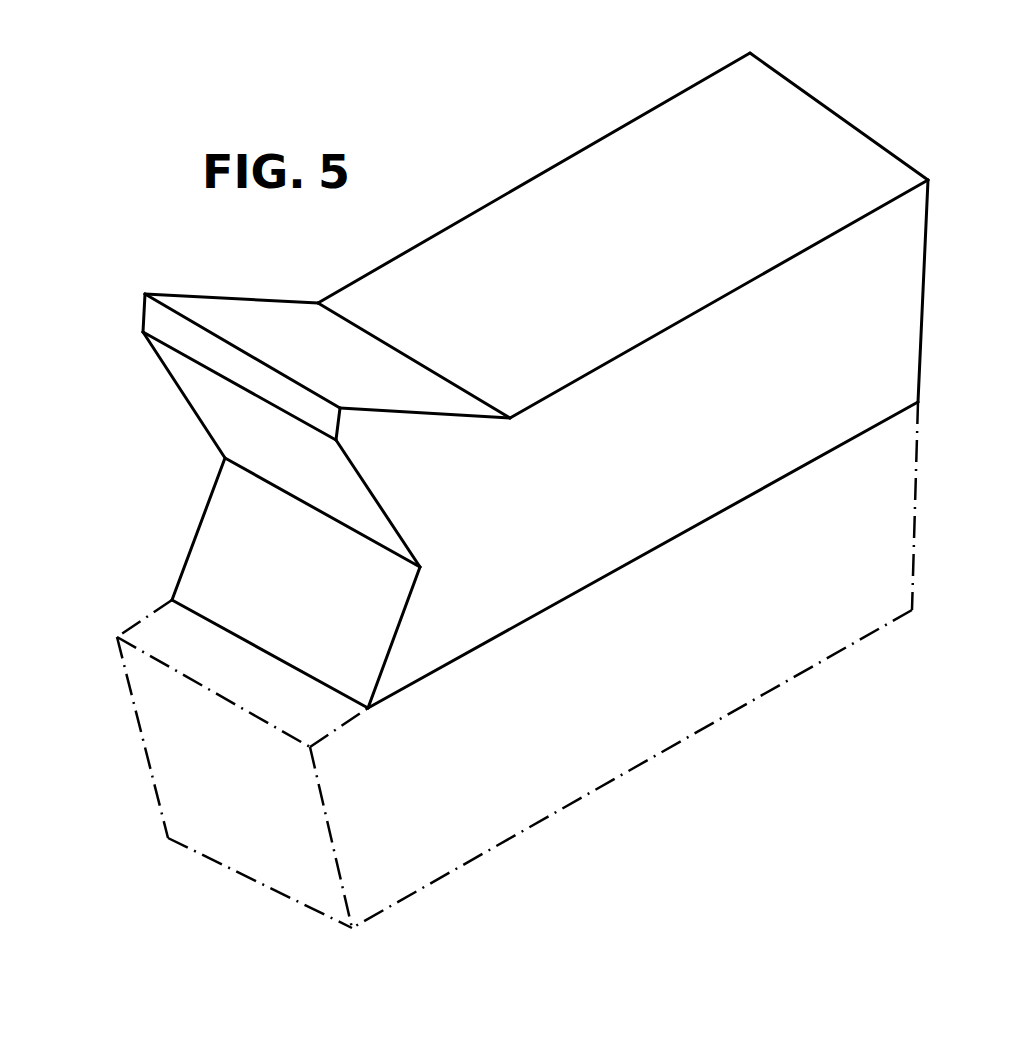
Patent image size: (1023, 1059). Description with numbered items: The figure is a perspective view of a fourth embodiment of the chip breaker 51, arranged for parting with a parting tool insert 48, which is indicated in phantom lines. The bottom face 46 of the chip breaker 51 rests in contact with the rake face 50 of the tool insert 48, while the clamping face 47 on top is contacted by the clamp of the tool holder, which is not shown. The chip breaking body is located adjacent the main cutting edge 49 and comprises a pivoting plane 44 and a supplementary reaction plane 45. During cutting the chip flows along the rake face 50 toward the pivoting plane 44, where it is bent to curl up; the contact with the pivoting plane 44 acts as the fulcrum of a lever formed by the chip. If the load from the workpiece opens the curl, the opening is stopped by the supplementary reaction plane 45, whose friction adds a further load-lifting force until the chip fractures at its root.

The pivoting plane 44 is at (217, 543).
The supplementary reaction plane 45 is at (217, 412).
The bottom face 46 is at (783, 477).
The clamping face 47 is at (790, 105).
The tool insert 48 is at (733, 660).
The main cutting edge 49 is at (212, 688).
The rake face 50 is at (165, 640).
The chip breaker 51 is at (890, 315).